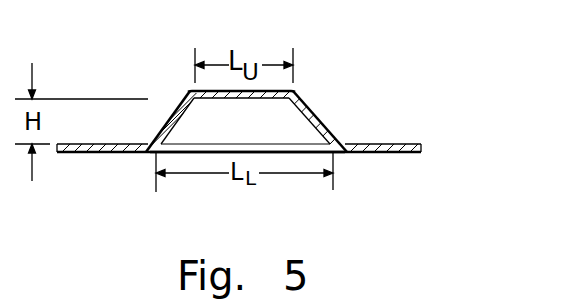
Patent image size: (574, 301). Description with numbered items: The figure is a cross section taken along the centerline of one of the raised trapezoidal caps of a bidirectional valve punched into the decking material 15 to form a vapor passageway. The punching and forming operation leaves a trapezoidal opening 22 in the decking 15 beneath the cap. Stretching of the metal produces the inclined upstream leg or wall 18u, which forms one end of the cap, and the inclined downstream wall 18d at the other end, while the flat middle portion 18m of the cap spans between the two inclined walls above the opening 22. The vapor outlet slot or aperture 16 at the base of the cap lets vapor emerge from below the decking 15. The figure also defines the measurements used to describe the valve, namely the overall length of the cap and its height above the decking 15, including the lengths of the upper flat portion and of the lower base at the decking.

The decking material 15 is at (387, 143).
The vapor outlet slots or apertures 16 is at (210, 153).
The inclined downstream wall 18d is at (161, 118).
The middle top wall of rib 18m is at (194, 90).
The inclined upstream leg or wall 18u is at (308, 107).
The trapezoidal opening 22 is at (275, 124).